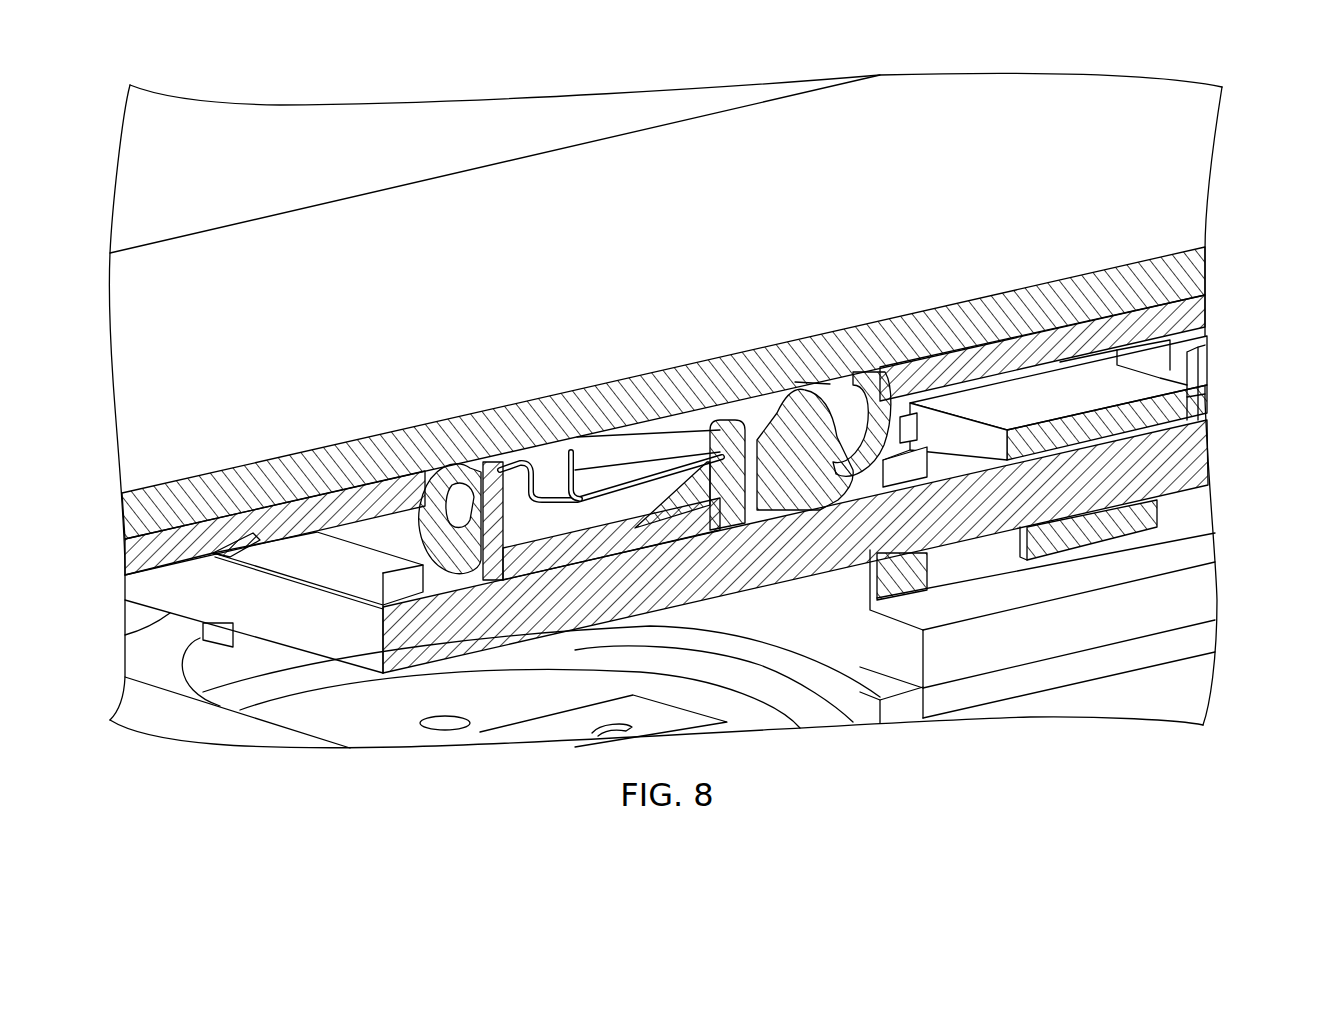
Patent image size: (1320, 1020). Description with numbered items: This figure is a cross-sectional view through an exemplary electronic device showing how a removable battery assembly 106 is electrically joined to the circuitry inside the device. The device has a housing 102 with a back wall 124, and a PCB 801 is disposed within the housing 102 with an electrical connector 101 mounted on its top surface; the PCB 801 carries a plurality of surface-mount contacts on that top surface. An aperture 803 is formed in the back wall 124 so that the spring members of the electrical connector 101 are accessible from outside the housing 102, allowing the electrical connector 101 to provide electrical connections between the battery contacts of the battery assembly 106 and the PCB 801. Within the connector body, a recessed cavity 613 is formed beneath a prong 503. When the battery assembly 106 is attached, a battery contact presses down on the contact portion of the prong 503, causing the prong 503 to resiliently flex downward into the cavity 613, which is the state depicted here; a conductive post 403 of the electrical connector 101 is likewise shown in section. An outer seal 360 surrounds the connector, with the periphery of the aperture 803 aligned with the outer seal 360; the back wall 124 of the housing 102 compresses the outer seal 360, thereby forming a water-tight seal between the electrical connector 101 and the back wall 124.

The battery assembly 106 is at (1250, 90).
The housing 102 is at (1250, 295).
The aperture 803 is at (833, 327).
The printed circuit board 801 is at (962, 520).
The back wall 124 is at (250, 534).
The electrical connector 101 is at (505, 570).
The recessed cavity 613 is at (537, 527).
The prong 503 is at (643, 463).
The conductive post 403 is at (730, 497).
The outer seal 360 is at (860, 393).